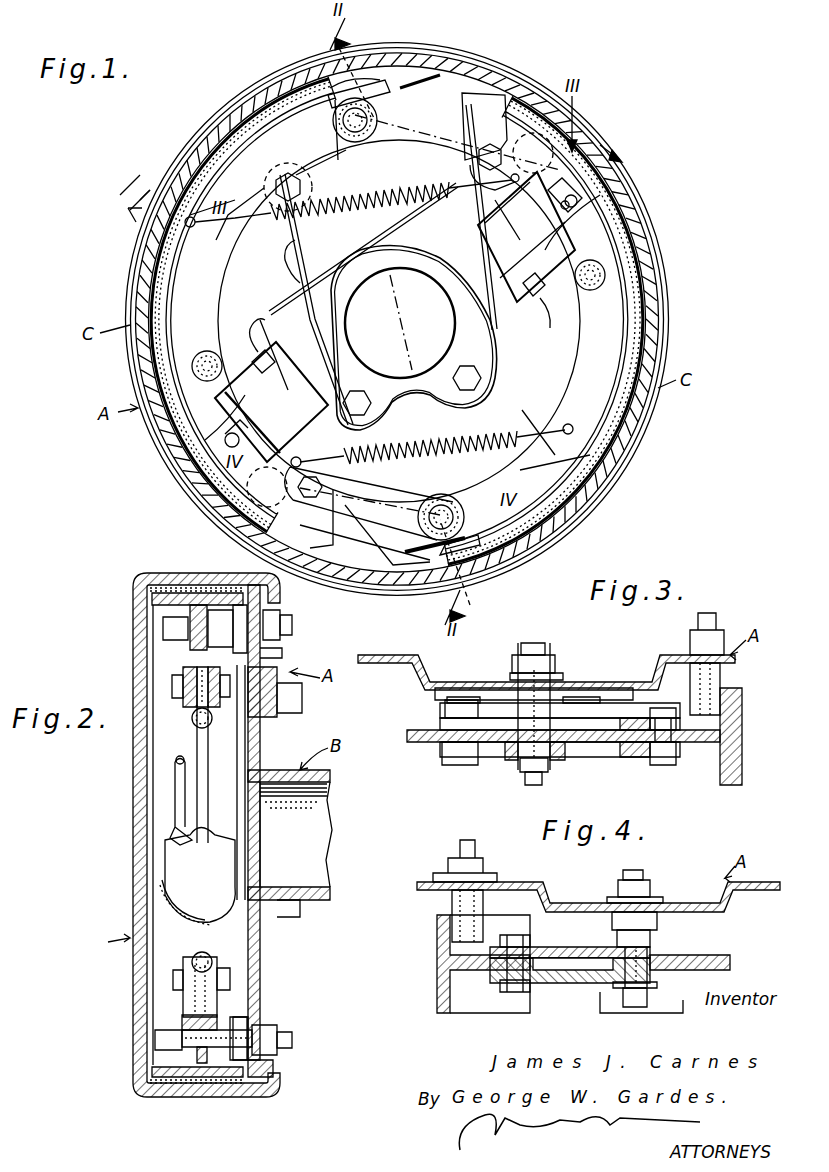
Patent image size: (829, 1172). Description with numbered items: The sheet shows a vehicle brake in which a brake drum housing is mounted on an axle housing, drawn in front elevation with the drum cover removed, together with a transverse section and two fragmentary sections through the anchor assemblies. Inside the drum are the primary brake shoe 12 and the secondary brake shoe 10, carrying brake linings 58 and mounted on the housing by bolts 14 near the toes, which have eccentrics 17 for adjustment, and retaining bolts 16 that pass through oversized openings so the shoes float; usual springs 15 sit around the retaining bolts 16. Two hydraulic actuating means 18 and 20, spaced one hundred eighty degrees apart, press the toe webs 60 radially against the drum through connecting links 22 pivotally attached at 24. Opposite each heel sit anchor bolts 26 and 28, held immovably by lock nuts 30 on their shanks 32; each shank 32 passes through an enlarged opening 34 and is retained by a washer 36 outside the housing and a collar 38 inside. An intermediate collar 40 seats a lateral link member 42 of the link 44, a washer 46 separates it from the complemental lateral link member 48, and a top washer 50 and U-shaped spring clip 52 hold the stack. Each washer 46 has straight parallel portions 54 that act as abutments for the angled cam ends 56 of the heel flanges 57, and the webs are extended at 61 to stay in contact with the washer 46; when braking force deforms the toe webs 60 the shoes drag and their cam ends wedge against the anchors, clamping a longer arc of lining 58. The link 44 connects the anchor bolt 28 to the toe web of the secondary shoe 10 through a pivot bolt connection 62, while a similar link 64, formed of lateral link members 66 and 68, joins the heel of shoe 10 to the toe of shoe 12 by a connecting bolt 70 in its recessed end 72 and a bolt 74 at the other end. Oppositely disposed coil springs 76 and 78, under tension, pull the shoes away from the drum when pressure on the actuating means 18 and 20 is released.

In FIG. 1, the secondary brake shoe 10 is at (200, 245).
In FIG. 2, the secondary brake shoe 10 is at (163, 805).
In FIG. 3, the secondary brake shoe 10 is at (416, 722).
In FIG. 4, the secondary brake shoe 10 is at (437, 988).
In FIG. 1, the primary brake shoe 12 is at (610, 352).
In FIG. 2, the primary brake shoe 12 is at (254, 822).
In FIG. 3, the primary brake shoe 12 is at (742, 748).
In FIG. 4, the primary brake shoe 12 is at (730, 958).
In FIG. 1, the bolt 14 is at (230, 500).
In FIG. 3, the bolt 14 is at (715, 635).
In FIG. 4, the bolt 14 is at (448, 862).
In FIG. 1, the spring 15 is at (215, 360).
In FIG. 1, the retaining bolt 16 is at (165, 372).
In FIG. 2, the retaining bolt 16 is at (196, 835).
In FIG. 1, the eccentric 17 is at (552, 80).
In FIG. 2, the eccentric 17 is at (197, 835).
In FIG. 3, the eccentric 17 is at (722, 685).
In FIG. 4, the eccentric 17 is at (452, 905).
In FIG. 1, the actuating means 18 is at (524, 217).
In FIG. 1, the actuating means 20 is at (271, 351).
In FIG. 2, the actuating means 20 is at (197, 815).
In FIG. 1, the connecting link 22 is at (620, 210).
In FIG. 1, the pivotal connection 24 is at (600, 195).
In FIG. 1, the anchor bolt 26 is at (377, 120).
In FIG. 2, the anchor bolt 26 is at (163, 627).
In FIG. 3, the anchor bolt 26 is at (540, 780).
In FIG. 1, the anchor bolt 28 is at (440, 565).
In FIG. 2, the anchor bolt 28 is at (155, 1042).
In FIG. 4, the anchor bolt 28 is at (648, 960).
In FIG. 2, the lock nut 30 is at (280, 628).
In FIG. 3, the lock nut 30 is at (548, 655).
In FIG. 4, the lock nut 30 is at (648, 885).
In FIG. 2, the shank 32 is at (300, 628).
In FIG. 3, the shank 32 is at (533, 642).
In FIG. 4, the shank 32 is at (630, 875).
In FIG. 2, the enlarged opening 34 is at (266, 653).
In FIG. 3, the enlarged opening 34 is at (512, 668).
In FIG. 4, the enlarged opening 34 is at (607, 900).
In FIG. 2, the washer 36 is at (270, 605).
In FIG. 3, the washer 36 is at (560, 673).
In FIG. 4, the washer 36 is at (662, 900).
In FIG. 2, the collar 38 is at (234, 580).
In FIG. 3, the collar 38 is at (515, 694).
In FIG. 4, the collar 38 is at (612, 920).
In FIG. 2, the intermediate collar 40 is at (225, 608).
In FIG. 3, the intermediate collar 40 is at (565, 705).
In FIG. 4, the intermediate collar 40 is at (617, 940).
In FIG. 2, the lateral link member 42 is at (183, 985).
In FIG. 4, the lateral link member 42 is at (525, 992).
In FIG. 1, the link 44 is at (385, 478).
In FIG. 2, the link 44 is at (180, 1000).
In FIG. 4, the link 44 is at (564, 992).
In FIG. 1, the washer 46 is at (432, 68).
In FIG. 2, the washer 46 is at (190, 650).
In FIG. 3, the washer 46 is at (560, 742).
In FIG. 4, the washer 46 is at (612, 1005).
In FIG. 1, the complemental lateral link member 48 is at (395, 525).
In FIG. 2, the complemental lateral link member 48 is at (217, 1000).
In FIG. 4, the complemental lateral link member 48 is at (590, 983).
In FIG. 1, the top washer 50 is at (350, 140).
In FIG. 2, the top washer 50 is at (205, 610).
In FIG. 3, the top washer 50 is at (535, 775).
In FIG. 4, the top washer 50 is at (652, 998).
In FIG. 1, the spring clip 52 is at (500, 548).
In FIG. 2, the spring clip 52 is at (195, 615).
In FIG. 3, the spring clip 52 is at (552, 752).
In FIG. 4, the spring clip 52 is at (648, 1005).
In FIG. 1, the straight parallel portion 54 is at (335, 122).
In FIG. 1, the cam end 56 is at (440, 500).
In FIG. 3, the cam end 56 is at (515, 745).
In FIG. 4, the cam end 56 is at (660, 980).
In FIG. 1, the heel flange 57 is at (300, 95).
In FIG. 2, the heel flange 57 is at (180, 672).
In FIG. 3, the heel flange 57 is at (500, 745).
In FIG. 4, the heel flange 57 is at (695, 975).
In FIG. 1, the brake lining 58 is at (650, 395).
In FIG. 2, the brake lining 58 is at (148, 592).
In FIG. 3, the brake lining 58 is at (742, 712).
In FIG. 1, the toe web 60 is at (505, 100).
In FIG. 1, the heel web extension 61 is at (395, 78).
In FIG. 2, the heel web extension 61 is at (150, 597).
In FIG. 4, the heel web extension 61 is at (600, 1005).
In FIG. 1, the pivot bolt connection 62 is at (354, 491).
In FIG. 2, the pivot bolt connection 62 is at (230, 978).
In FIG. 4, the pivot bolt connection 62 is at (505, 995).
In FIG. 1, the link 64 is at (258, 188).
In FIG. 2, the link 64 is at (185, 752).
In FIG. 3, the link 64 is at (634, 768).
In FIG. 1, the lateral link member 66 is at (383, 302).
In FIG. 2, the lateral link member 66 is at (195, 700).
In FIG. 3, the lateral link member 66 is at (640, 752).
In FIG. 2, the lateral link member 68 is at (246, 718).
In FIG. 3, the lateral link member 68 is at (625, 720).
In FIG. 1, the connecting bolt 70 is at (475, 150).
In FIG. 3, the connecting bolt 70 is at (665, 718).
In FIG. 1, the recessed end 72 is at (490, 135).
In FIG. 3, the recessed end 72 is at (680, 752).
In FIG. 1, the bolt 74 is at (278, 185).
In FIG. 2, the bolt 74 is at (183, 690).
In FIG. 3, the bolt 74 is at (445, 765).
In FIG. 1, the coil spring 76 is at (352, 215).
In FIG. 2, the coil spring 76 is at (210, 728).
In FIG. 1, the coil spring 78 is at (432, 416).
In FIG. 2, the coil spring 78 is at (192, 960).